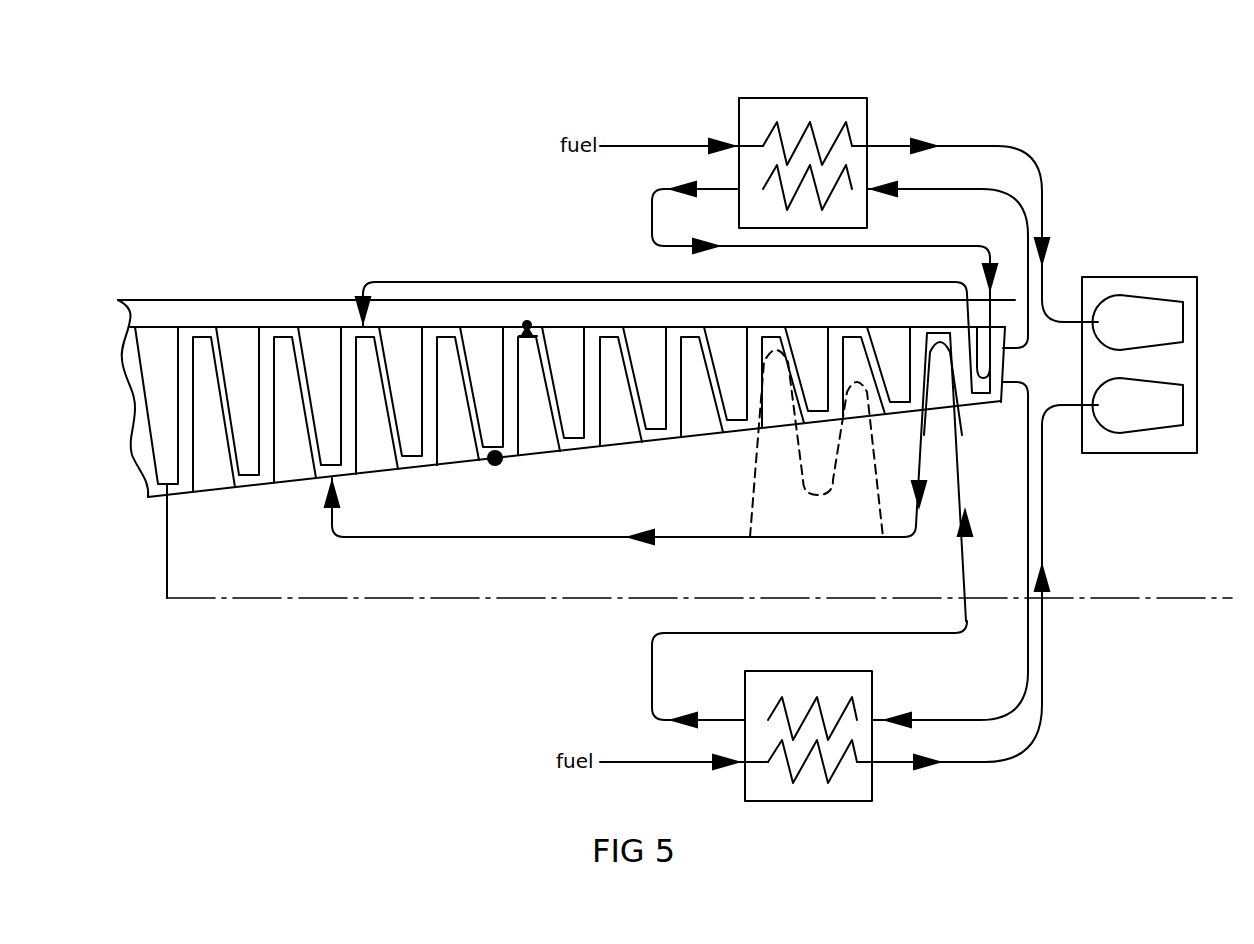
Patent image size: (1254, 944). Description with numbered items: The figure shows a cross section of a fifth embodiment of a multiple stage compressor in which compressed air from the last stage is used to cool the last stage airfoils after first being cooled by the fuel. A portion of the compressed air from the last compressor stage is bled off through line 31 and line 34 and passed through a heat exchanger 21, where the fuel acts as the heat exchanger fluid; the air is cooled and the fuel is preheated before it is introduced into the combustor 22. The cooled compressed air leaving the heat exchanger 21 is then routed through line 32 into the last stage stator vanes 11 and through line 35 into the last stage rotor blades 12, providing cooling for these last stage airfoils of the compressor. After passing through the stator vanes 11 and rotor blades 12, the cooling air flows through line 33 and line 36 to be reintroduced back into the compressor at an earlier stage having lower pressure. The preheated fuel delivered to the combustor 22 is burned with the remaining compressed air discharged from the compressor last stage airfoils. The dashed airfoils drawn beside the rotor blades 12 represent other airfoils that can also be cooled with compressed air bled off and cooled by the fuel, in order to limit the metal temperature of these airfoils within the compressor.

The last stage stator vanes 11 is at (978, 380).
The last stage rotor blades 12 is at (942, 392).
The heat exchanger 21 is at (792, 117).
The combustor 22 is at (1132, 318).
The line 31 is at (985, 190).
The line 32 is at (648, 227).
The line 33 is at (547, 280).
The line 34 is at (1010, 700).
The line 35 is at (653, 652).
The line 36 is at (472, 538).